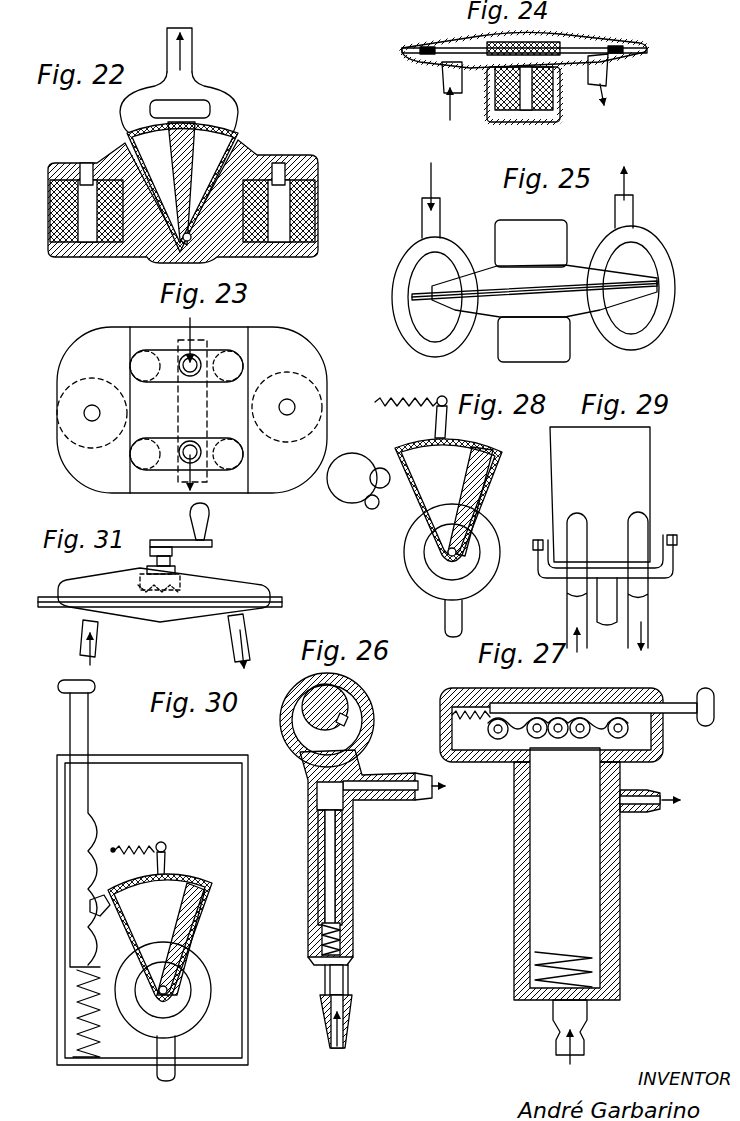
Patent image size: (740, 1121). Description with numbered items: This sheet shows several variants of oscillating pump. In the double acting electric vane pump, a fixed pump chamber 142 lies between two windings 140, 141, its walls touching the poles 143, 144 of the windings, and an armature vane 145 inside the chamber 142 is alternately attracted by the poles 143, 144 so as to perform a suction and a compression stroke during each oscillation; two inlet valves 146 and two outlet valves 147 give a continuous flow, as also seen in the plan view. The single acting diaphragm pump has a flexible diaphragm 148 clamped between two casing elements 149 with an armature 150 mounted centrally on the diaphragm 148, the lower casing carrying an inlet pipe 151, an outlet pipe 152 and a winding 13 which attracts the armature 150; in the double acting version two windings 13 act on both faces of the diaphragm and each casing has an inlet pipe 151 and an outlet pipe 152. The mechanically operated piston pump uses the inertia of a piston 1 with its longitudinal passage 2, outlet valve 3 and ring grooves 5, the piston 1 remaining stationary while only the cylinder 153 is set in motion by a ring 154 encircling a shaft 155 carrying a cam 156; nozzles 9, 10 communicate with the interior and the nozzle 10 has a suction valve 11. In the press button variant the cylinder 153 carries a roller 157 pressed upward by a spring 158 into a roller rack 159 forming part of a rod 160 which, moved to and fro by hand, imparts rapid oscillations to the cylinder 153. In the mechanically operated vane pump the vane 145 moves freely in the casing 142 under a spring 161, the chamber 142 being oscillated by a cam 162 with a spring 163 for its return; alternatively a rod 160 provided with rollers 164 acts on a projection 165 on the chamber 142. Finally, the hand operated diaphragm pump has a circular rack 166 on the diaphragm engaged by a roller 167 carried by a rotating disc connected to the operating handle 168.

In FIG. 26, the piston 1 is at (342, 878).
In FIG. 26, the longitudinal passage 2 is at (334, 850).
In FIG. 26, the outlet valve 3 is at (333, 813).
In FIG. 26, the ring grooves 5 is at (312, 868).
In FIG. 26, the nozzle 9 is at (385, 790).
In FIG. 27, the nozzle 9 is at (627, 803).
In FIG. 26, the nozzle 10 is at (352, 1018).
In FIG. 27, the nozzle 10 is at (575, 1024).
In FIG. 26, the suction valve 11 is at (353, 979).
In FIG. 24, the winding 13 is at (547, 110).
In FIG. 25, the winding 13 is at (532, 291).
In FIG. 22, the winding 140 is at (54, 227).
In FIG. 23, the winding 140 is at (89, 377).
In FIG. 22, the winding 141 is at (314, 208).
In FIG. 23, the winding 141 is at (284, 371).
In FIG. 22, the pump chamber 142 is at (222, 131).
In FIG. 23, the pump chamber 142 is at (228, 414).
In FIG. 28, the pump chamber 142 is at (487, 488).
In FIG. 29, the pump chamber 142 is at (600, 494).
In FIG. 30, the pump chamber 142 is at (200, 936).
In FIG. 22, the pole 143 is at (125, 157).
In FIG. 22, the pole 144 is at (245, 150).
In FIG. 22, the armature vane 145 is at (173, 163).
In FIG. 23, the armature vane 145 is at (180, 413).
In FIG. 28, the armature vane 145 is at (472, 456).
In FIG. 30, the armature vane 145 is at (193, 887).
In FIG. 23, the upper slot 146 is at (141, 350).
In FIG. 29, the upper slot 146 is at (577, 513).
In FIG. 22, the outlet valves 147 is at (135, 127).
In FIG. 23, the outlet valves 147 is at (146, 470).
In FIG. 29, the outlet valves 147 is at (638, 512).
In FIG. 24, the diaphragm 148 is at (588, 46).
In FIG. 24, the casing elements 149 is at (437, 47).
In FIG. 25, the casing elements 149 is at (534, 291).
In FIG. 31, the casing elements 149 is at (246, 592).
In FIG. 24, the armature 150 is at (552, 36).
In FIG. 24, the inlet pipe 151 is at (441, 91).
In FIG. 25, the inlet pipe 151 is at (455, 263).
In FIG. 31, the inlet pipe 151 is at (97, 641).
In FIG. 24, the outlet pipe 152 is at (603, 83).
In FIG. 25, the outlet pipe 152 is at (650, 244).
In FIG. 31, the outlet pipe 152 is at (243, 641).
In FIG. 26, the cylinder 153 is at (357, 921).
In FIG. 27, the cylinder 153 is at (530, 908).
In FIG. 26, the ring 154 is at (366, 740).
In FIG. 26, the shaft 155 is at (342, 703).
In FIG. 26, the cam 156 is at (341, 723).
In FIG. 27, the roller 157 is at (558, 738).
In FIG. 27, the spring 158 is at (613, 958).
In FIG. 27, the roller rack 159 is at (625, 705).
In FIG. 30, the rod 160 is at (82, 737).
In FIG. 27, the rod 160 is at (677, 713).
In FIG. 28, the spring 161 is at (439, 488).
In FIG. 30, the spring 161 is at (126, 923).
In FIG. 28, the cam 162 is at (363, 513).
In FIG. 28, the spring 163 is at (411, 419).
In FIG. 30, the spring 163 is at (133, 845).
In FIG. 30, the rollers 164 is at (80, 907).
In FIG. 30, the projection 165 is at (93, 911).
In FIG. 31, the circular rack 166 is at (140, 592).
In FIG. 31, the roller 167 is at (177, 576).
In FIG. 31, the operating handle 168 is at (205, 523).